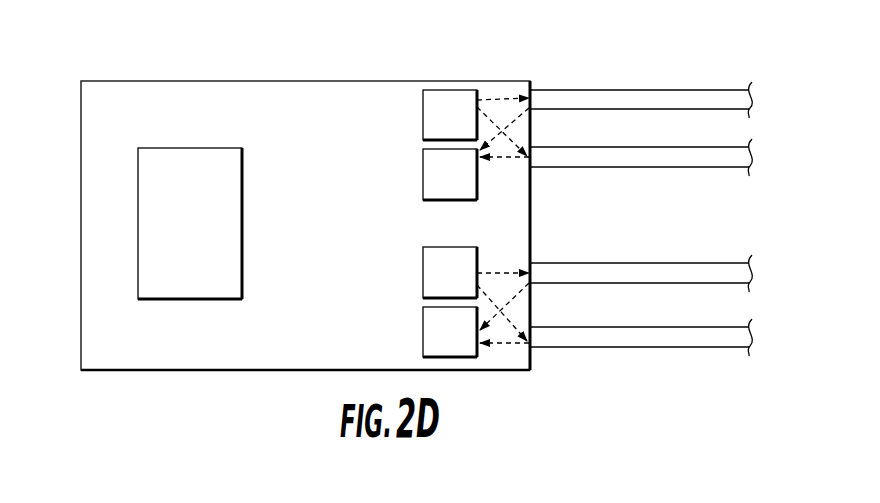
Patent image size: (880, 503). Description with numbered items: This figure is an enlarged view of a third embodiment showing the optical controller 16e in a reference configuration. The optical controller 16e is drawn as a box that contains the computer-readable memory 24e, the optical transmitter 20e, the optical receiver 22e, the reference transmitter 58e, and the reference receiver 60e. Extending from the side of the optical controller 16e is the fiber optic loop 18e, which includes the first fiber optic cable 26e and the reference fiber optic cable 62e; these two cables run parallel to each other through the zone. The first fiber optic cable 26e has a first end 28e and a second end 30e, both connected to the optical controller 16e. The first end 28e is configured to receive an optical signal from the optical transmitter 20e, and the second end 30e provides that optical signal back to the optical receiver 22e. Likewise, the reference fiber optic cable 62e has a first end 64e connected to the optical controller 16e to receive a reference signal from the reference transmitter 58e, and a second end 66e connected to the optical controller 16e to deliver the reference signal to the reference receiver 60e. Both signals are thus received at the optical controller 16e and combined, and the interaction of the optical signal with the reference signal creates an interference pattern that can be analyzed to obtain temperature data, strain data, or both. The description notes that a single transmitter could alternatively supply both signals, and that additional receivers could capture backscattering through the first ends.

The optical controller 16e is at (81, 187).
The fiber optic loop 18e is at (735, 215).
The optical transmitter 20e is at (423, 112).
The optical receiver 22e is at (423, 172).
The computer-readable memory 24e is at (210, 238).
The first fiber optic cable 26e is at (647, 88).
The first end 28e is at (532, 88).
The second end 30e is at (532, 168).
The reference transmitter 58e is at (423, 268).
The reference receiver 60e is at (423, 330).
The reference fiber optic cable 62e is at (668, 350).
The first end 64e is at (532, 262).
The second end 66e is at (532, 349).